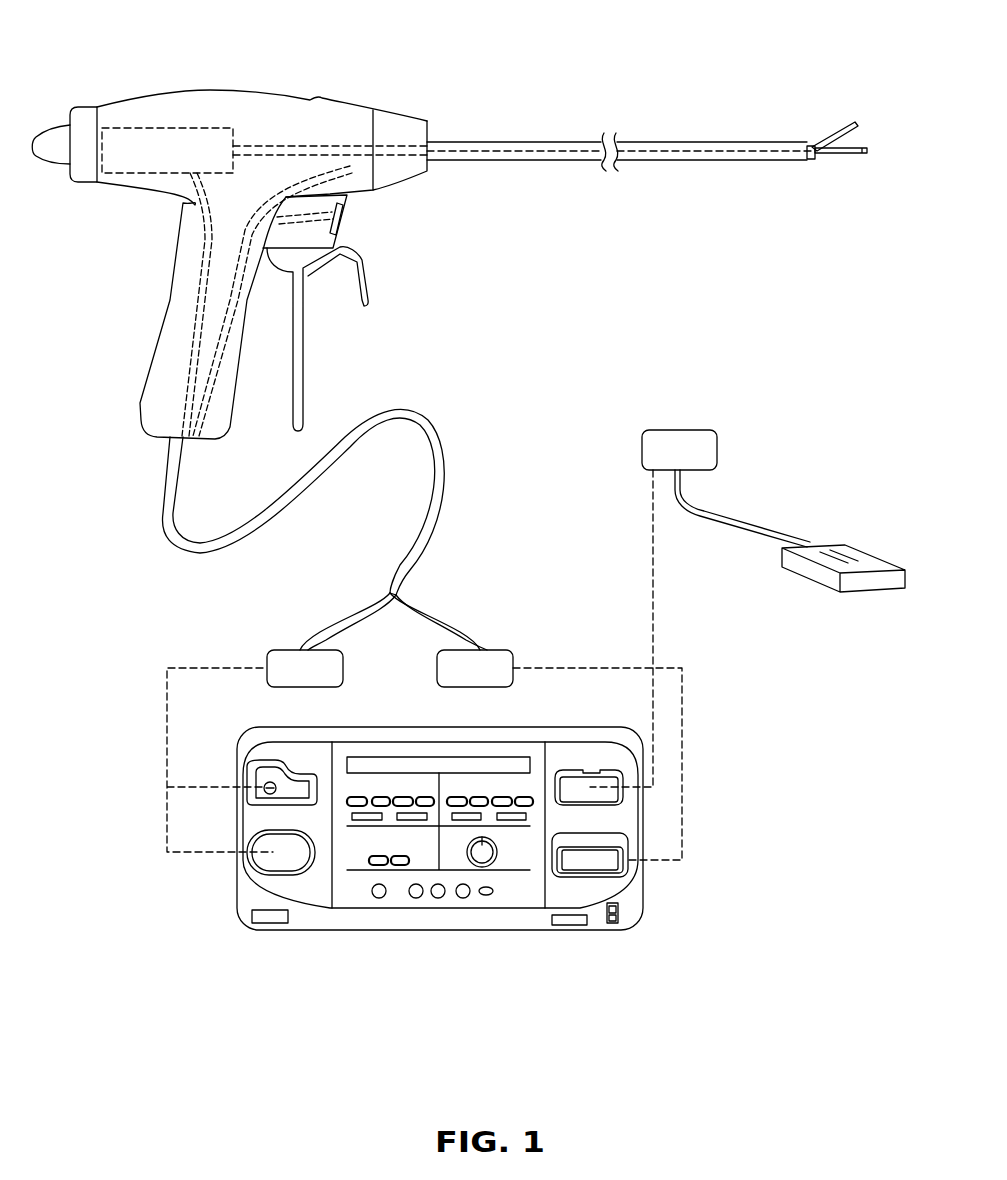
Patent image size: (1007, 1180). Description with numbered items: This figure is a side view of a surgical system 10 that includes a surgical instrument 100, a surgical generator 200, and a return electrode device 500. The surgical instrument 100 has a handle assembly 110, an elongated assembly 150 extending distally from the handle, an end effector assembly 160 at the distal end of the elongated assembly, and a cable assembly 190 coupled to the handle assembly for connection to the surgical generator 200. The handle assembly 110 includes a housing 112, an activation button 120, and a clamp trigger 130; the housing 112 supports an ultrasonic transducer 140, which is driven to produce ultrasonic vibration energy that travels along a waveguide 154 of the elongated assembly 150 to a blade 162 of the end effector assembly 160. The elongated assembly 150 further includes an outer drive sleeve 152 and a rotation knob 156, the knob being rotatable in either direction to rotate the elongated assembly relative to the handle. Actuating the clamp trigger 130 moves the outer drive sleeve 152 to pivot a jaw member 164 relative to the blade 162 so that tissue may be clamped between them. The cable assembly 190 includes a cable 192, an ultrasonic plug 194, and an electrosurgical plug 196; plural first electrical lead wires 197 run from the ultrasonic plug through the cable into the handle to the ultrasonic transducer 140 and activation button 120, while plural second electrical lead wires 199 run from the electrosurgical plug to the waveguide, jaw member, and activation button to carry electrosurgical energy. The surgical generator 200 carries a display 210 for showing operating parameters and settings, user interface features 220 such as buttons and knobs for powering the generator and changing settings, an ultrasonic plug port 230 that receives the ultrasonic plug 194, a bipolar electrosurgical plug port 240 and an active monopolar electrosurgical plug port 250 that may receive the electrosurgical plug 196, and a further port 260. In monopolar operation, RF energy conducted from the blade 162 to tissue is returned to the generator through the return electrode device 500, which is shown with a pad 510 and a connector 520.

The surgical system 10 is at (614, 323).
The surgical instrument 100 is at (410, 104).
The handle assembly 110 is at (239, 76).
The housing 112 is at (183, 88).
The activation button 120 is at (344, 216).
The clamp trigger 130 is at (303, 360).
The ultrasonic transducer 140 is at (128, 122).
The elongated assembly 150 is at (708, 128).
The outer drive sleeve 152 is at (500, 142).
The waveguide 154 is at (320, 145).
The rotation knob 156 is at (411, 176).
The end effector assembly 160 is at (800, 180).
The blade 162 is at (858, 162).
The jaw member 164 is at (856, 109).
The cable assembly 190 is at (450, 446).
The cable 192 is at (407, 403).
The ultrasonic plug 194 is at (497, 648).
The electrosurgical plug 196 is at (282, 648).
The first electrical lead wires 197 is at (236, 303).
The second electrical lead wires 199 is at (215, 300).
The surgical generator 200 is at (652, 960).
The display 210 is at (500, 756).
The user interface features 220 is at (377, 862).
The ultrasonic plug port 230 is at (613, 870).
The electrosurgical plug port 240 is at (265, 866).
The active monopolar electrosurgical plug port 250 is at (252, 795).
The connector port 260 is at (613, 796).
The return electrode device 500 is at (813, 452).
The foot pedal 510 is at (860, 560).
The connector 520 is at (692, 430).